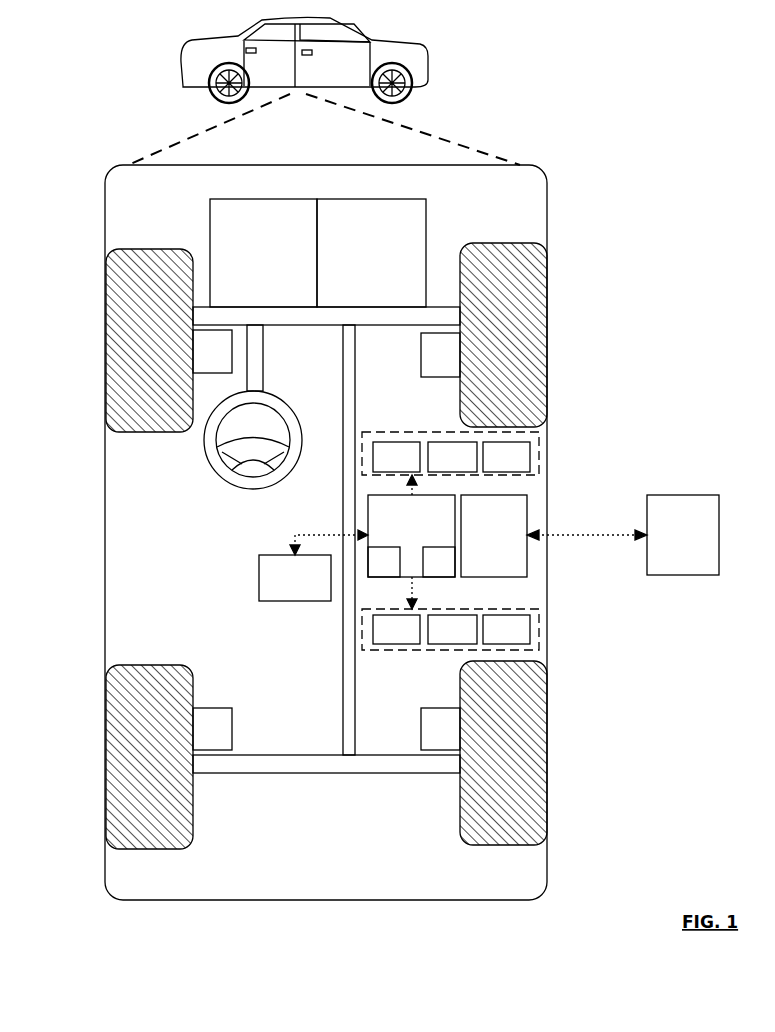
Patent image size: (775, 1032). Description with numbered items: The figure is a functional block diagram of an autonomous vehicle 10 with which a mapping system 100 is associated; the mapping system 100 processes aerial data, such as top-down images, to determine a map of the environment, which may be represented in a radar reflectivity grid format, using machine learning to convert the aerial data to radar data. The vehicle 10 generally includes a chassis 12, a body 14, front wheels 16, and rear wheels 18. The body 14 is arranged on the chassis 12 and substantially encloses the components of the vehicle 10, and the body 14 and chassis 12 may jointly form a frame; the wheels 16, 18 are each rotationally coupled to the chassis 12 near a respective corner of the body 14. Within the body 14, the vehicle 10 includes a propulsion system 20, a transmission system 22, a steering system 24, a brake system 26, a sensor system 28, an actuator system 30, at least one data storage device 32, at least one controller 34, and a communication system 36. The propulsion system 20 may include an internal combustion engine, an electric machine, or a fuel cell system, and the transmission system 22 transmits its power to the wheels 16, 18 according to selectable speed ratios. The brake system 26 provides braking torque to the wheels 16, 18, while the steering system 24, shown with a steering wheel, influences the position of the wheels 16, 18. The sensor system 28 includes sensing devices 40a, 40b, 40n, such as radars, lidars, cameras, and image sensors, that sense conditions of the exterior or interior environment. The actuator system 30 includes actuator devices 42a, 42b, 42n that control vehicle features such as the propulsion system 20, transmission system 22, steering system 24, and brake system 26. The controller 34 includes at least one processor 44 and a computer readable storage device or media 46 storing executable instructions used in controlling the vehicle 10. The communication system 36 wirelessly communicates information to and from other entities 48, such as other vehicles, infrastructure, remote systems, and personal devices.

The vehicle 10 is at (183, 68).
The mapping system 100 is at (567, 177).
The body 14 is at (105, 517).
The chassis 12 is at (343, 690).
The front wheels 16 is at (150, 249).
The rear wheels 18 is at (164, 849).
The propulsion system 20 is at (263, 253).
The transmission system 22 is at (371, 253).
The steering system 24 is at (283, 347).
The brake system 26 is at (326, 540).
The sensor system 28 is at (376, 436).
The actuator system 30 is at (398, 650).
The data storage device 32 is at (295, 578).
The controller 34 is at (411, 536).
The communication system 36 is at (494, 536).
The sensing device 40a is at (396, 457).
The sensing device 40b is at (452, 457).
The sensing device 40n is at (506, 457).
The actuator device 42a is at (396, 629).
The actuator device 42b is at (452, 629).
The actuator device 42n is at (506, 629).
The processor 44 is at (384, 562).
The computer readable storage device or media 46 is at (439, 562).
The other entities 48 is at (683, 535).